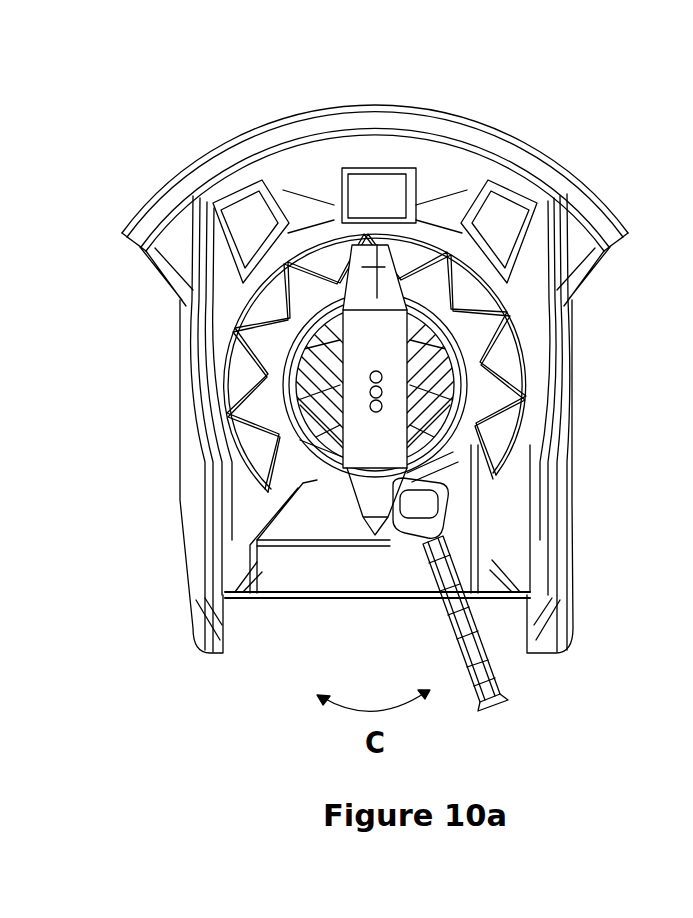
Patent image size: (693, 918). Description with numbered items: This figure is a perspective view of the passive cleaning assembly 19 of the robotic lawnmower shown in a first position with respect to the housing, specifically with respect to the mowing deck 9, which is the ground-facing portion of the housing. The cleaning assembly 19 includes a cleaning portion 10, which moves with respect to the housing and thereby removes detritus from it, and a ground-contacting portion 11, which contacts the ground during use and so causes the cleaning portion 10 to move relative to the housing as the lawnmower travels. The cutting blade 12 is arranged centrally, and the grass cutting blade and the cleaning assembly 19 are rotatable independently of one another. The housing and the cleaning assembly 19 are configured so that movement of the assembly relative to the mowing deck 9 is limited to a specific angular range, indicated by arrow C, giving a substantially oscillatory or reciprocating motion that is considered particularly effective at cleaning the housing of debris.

The mowing deck 9 is at (567, 184).
The cleaning portion 10 is at (545, 400).
The ground-contacting portion 11 is at (447, 655).
The cutting blade 12 is at (407, 303).
The cleaning assembly 19 is at (256, 373).